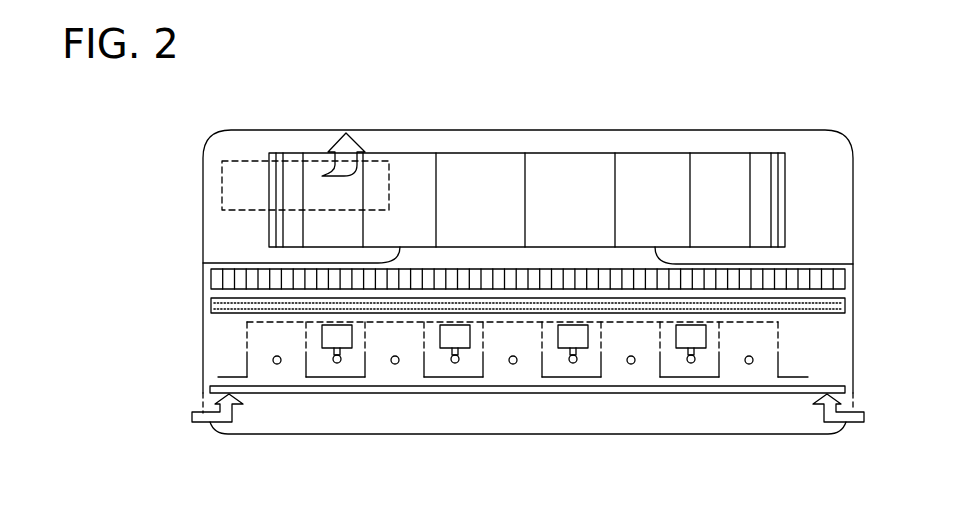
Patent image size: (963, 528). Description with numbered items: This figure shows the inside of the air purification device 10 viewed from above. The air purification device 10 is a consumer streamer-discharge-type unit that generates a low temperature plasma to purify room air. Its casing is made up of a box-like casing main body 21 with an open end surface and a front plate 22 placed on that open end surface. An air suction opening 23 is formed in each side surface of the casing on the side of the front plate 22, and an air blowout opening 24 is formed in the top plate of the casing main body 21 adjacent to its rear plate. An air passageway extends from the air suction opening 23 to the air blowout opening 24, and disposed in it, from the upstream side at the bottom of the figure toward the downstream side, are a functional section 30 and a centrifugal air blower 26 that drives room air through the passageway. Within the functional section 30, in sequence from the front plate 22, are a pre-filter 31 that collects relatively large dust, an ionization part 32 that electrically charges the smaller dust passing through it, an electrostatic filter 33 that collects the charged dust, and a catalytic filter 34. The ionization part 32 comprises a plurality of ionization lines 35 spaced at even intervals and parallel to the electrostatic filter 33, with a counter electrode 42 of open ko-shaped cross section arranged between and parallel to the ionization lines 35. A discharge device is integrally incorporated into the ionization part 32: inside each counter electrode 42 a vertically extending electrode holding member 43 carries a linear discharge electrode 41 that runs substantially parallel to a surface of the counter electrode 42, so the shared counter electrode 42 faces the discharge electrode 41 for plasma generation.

The air purification device 10 is at (850, 127).
The casing main body 21 is at (853, 221).
The front plate 22 is at (765, 435).
The air suction opening 23 is at (198, 398).
The air blowout opening 24 is at (243, 158).
The centrifugal air blower 26 is at (673, 152).
The functional section 30 is at (68, 272).
The pre-filter 31 is at (208, 392).
The ionization part 32 is at (243, 350).
The electrostatic filter 33 is at (209, 312).
The catalytic filter 34 is at (208, 281).
The ionization line 35 is at (277, 366).
The discharge electrode 41 is at (346, 363).
The counter electrode 42 is at (367, 365).
The electrode holding member 43 is at (330, 338).